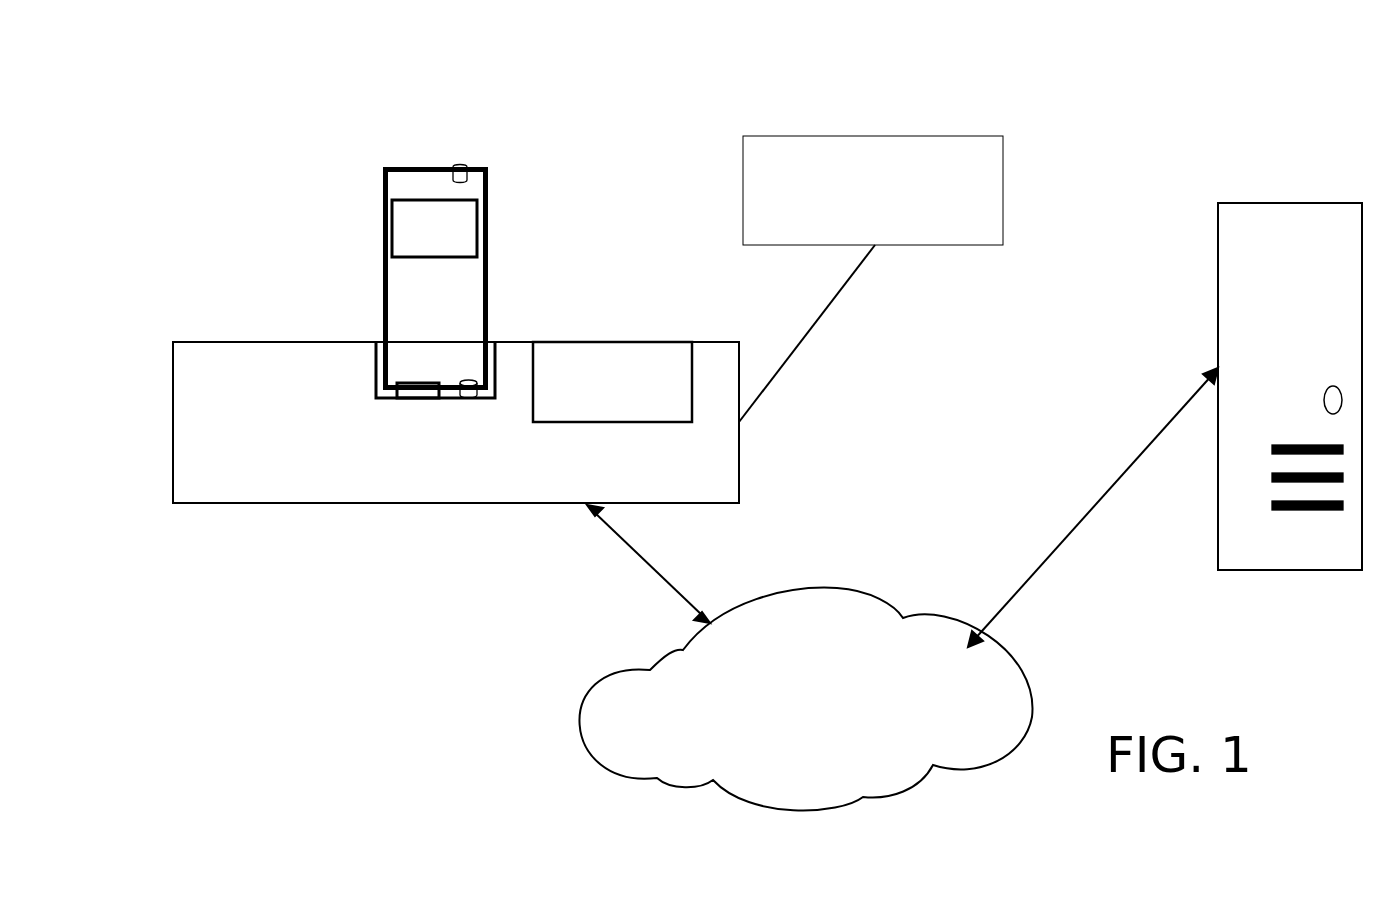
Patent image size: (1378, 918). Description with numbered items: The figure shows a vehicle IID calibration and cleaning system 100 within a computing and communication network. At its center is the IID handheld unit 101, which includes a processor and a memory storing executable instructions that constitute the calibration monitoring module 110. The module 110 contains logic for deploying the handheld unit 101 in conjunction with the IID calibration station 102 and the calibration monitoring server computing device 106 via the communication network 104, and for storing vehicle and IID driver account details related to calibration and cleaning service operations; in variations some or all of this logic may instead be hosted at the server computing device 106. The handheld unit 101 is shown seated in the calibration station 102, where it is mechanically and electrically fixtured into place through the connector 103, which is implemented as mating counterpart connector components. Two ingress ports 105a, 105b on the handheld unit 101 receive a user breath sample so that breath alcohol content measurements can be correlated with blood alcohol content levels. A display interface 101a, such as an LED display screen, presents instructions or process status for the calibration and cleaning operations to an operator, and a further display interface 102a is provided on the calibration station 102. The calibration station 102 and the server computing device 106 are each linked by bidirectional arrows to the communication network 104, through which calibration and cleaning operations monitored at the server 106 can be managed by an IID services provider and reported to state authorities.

The vehicle IID calibration and cleaning system 100 is at (1342, 57).
The IID handheld unit 101 is at (413, 340).
The display interface 101a is at (470, 237).
The IID calibration station 102 is at (197, 467).
The display interface 102a is at (543, 395).
The connector 103 is at (404, 401).
The communication network 104 is at (809, 768).
The ingress port 105a is at (462, 163).
The ingress port 105b is at (465, 398).
The calibration monitoring server computing device 106 is at (1262, 335).
The calibration monitoring module 110 is at (850, 237).